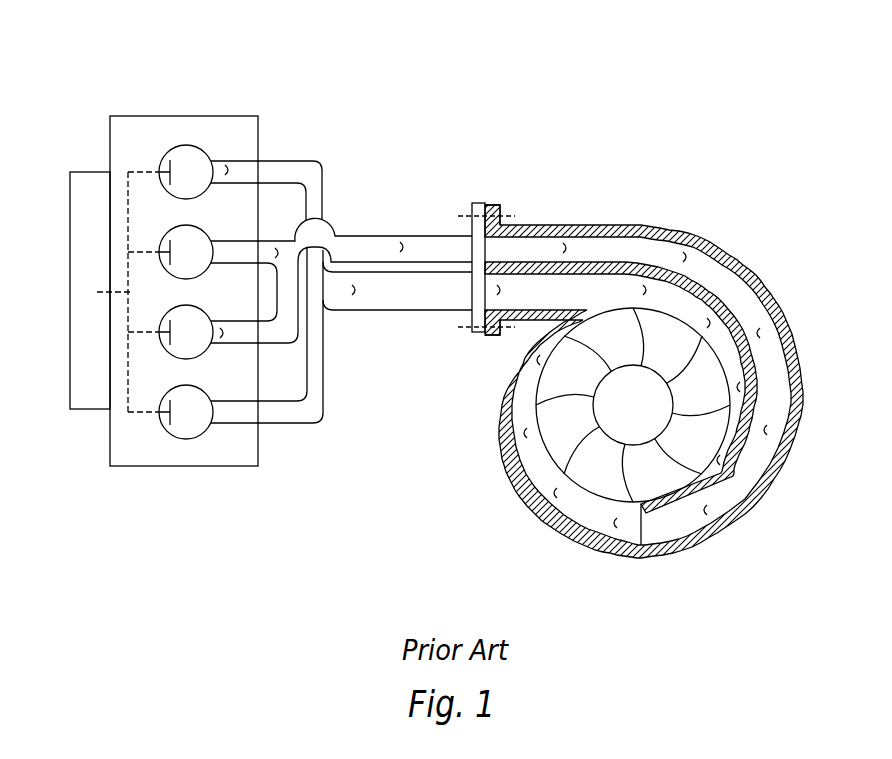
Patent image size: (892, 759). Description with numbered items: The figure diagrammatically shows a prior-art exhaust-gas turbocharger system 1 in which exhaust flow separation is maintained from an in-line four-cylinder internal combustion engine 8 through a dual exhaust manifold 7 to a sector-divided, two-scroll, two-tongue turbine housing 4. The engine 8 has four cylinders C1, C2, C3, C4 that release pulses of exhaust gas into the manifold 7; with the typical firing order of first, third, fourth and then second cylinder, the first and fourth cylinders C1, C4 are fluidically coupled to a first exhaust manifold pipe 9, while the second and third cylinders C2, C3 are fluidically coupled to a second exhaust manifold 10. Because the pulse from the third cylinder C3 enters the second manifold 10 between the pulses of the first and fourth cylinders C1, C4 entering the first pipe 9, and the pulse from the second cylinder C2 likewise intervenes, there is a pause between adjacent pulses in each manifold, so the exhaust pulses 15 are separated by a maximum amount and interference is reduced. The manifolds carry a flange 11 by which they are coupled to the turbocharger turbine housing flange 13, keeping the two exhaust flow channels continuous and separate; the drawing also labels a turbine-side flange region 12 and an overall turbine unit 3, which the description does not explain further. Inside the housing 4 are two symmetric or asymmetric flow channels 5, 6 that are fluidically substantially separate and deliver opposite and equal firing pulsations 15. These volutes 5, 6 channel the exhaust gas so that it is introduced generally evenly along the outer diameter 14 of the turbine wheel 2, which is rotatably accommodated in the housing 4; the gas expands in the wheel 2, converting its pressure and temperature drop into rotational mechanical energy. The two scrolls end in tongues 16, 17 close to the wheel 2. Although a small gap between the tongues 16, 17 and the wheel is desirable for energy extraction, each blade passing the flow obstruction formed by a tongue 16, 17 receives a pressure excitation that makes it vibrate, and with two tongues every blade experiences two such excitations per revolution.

The exhaust-gas turbocharger system 1 is at (499, 112).
The turbine wheel 2 is at (597, 487).
The turbine housing 3 is at (810, 310).
The turbine housing 4 is at (720, 236).
The flow channel 5 is at (738, 367).
The flow channel 6 is at (735, 296).
The dual exhaust manifold 7 is at (311, 126).
The engine 8 is at (205, 122).
The first exhaust manifold pipe 9 is at (315, 190).
The second exhaust manifold 10 is at (371, 237).
The flange 11 is at (471, 204).
The turbine inlet flange 12 is at (497, 203).
The turbine housing flange 13 is at (478, 332).
The outer diameter 14 is at (547, 455).
The exhaust pulses 15 is at (594, 252).
The tongue 16 is at (645, 562).
The tongue 17 is at (590, 313).
The first cylinder C1 is at (183, 430).
The second cylinder C2 is at (177, 347).
The third cylinder C3 is at (173, 241).
The fourth cylinder C4 is at (175, 158).